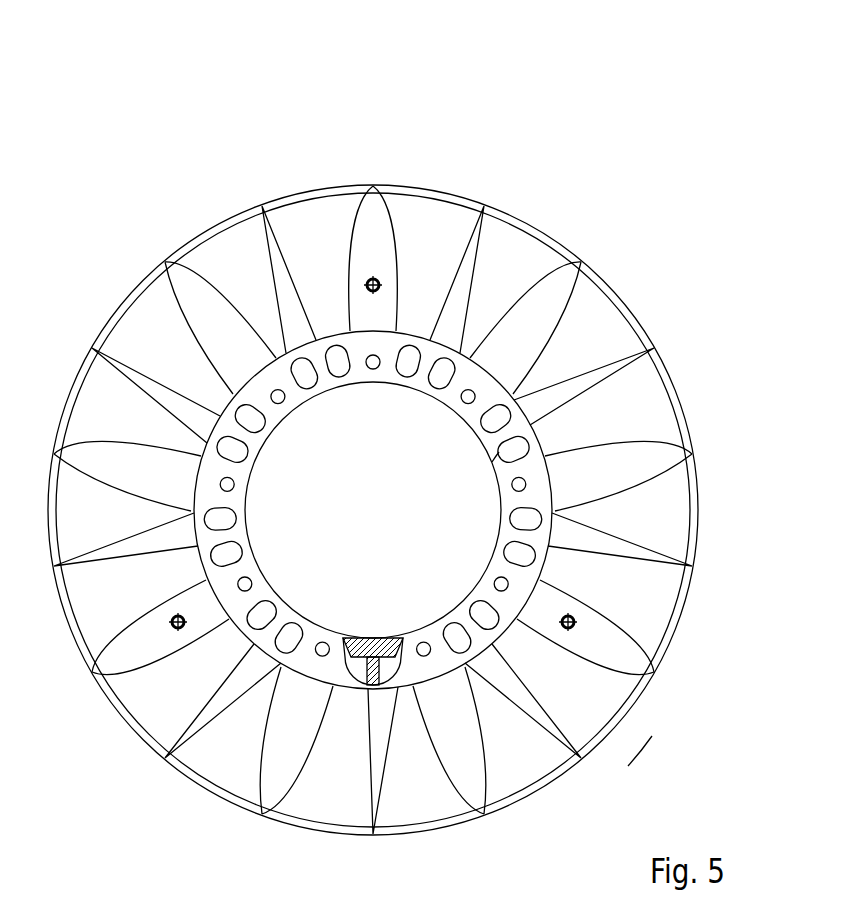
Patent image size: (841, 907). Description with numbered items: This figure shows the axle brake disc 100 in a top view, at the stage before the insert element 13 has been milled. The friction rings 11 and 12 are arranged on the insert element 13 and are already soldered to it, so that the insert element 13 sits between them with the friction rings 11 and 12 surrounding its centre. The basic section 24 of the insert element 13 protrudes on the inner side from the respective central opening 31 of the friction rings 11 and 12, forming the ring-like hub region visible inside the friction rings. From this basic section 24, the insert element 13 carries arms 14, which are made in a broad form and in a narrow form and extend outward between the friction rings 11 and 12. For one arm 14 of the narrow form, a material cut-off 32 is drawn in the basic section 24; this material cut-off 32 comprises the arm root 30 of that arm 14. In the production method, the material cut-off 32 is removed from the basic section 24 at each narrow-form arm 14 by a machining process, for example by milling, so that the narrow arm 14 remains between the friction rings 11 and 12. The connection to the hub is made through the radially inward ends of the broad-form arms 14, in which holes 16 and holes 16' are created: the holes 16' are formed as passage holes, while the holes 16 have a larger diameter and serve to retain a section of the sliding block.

The axle brake disc 100 is at (183, 149).
The friction ring 11 is at (641, 712).
The friction ring 12 is at (601, 749).
The insert element 13 is at (421, 412).
The arm 14 is at (118, 672).
The hole 16 is at (479, 505).
The hole 16' is at (635, 495).
The basic section 24 is at (262, 594).
The arm root 30 is at (369, 643).
The central opening 31 is at (494, 462).
The material cut-off 32 is at (410, 634).